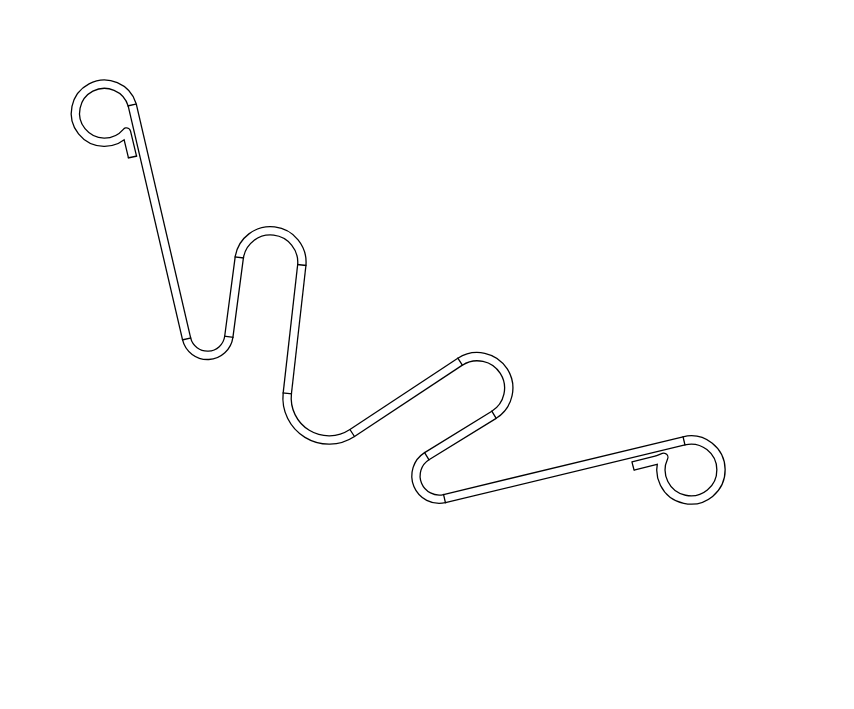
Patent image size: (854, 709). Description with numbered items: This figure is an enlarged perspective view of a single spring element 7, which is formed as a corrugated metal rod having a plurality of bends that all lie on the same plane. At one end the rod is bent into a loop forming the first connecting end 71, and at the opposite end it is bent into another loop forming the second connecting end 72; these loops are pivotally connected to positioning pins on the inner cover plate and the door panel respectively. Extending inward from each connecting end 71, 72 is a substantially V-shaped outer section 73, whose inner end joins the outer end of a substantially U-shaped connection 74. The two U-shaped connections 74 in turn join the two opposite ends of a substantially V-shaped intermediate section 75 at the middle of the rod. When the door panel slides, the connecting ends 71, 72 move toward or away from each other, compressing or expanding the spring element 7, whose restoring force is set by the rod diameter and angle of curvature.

The spring element 7 is at (432, 217).
The first connecting end 71 is at (713, 452).
The second connecting end 72 is at (118, 80).
The V-shaped outer section 73 is at (160, 232).
The U-shaped connection 74 is at (273, 226).
The V-shaped intermediate section 75 is at (295, 435).